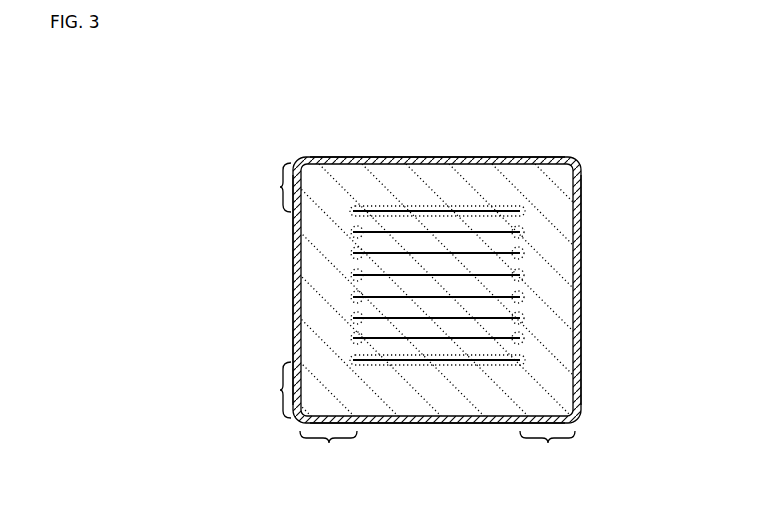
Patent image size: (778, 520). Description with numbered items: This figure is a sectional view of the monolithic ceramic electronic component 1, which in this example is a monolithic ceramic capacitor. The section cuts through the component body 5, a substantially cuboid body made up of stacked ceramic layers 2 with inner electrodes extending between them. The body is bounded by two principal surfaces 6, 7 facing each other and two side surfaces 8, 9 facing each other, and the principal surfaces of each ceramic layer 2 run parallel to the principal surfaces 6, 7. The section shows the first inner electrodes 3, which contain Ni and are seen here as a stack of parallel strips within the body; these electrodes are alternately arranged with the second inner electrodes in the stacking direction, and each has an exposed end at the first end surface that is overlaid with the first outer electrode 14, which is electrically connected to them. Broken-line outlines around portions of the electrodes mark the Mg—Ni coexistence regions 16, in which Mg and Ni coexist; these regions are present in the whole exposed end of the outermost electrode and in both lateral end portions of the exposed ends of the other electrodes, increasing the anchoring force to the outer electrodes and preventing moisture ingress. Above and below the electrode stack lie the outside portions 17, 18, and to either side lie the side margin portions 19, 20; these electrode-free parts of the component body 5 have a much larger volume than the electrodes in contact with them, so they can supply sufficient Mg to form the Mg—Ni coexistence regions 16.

The monolithic ceramic electronic component 1 is at (321, 48).
The ceramic layers 2 is at (423, 312).
The first inner electrodes 3 is at (427, 228).
The component body 5 is at (581, 220).
The principal surface 6 is at (483, 157).
The principal surface 7 is at (477, 424).
The side surface 8 is at (294, 306).
The side surface 9 is at (582, 303).
The first outer electrode 14 is at (313, 158).
The Mg—Ni coexistence regions 16 is at (448, 205).
The outside portion 17 is at (269, 187).
The outside portion 18 is at (269, 390).
The side margin portion 19 is at (328, 451).
The side margin portion 20 is at (547, 451).